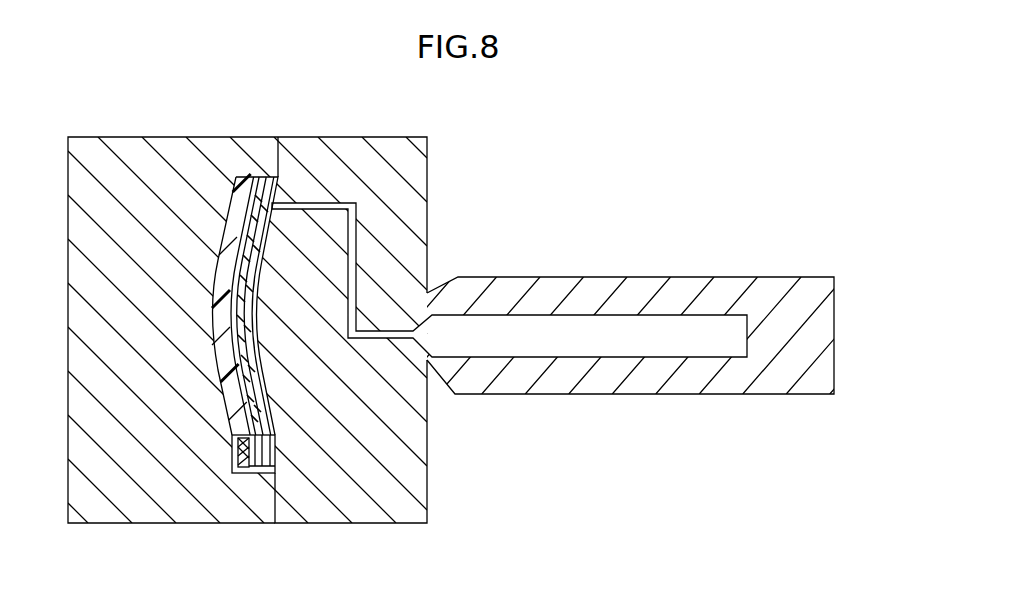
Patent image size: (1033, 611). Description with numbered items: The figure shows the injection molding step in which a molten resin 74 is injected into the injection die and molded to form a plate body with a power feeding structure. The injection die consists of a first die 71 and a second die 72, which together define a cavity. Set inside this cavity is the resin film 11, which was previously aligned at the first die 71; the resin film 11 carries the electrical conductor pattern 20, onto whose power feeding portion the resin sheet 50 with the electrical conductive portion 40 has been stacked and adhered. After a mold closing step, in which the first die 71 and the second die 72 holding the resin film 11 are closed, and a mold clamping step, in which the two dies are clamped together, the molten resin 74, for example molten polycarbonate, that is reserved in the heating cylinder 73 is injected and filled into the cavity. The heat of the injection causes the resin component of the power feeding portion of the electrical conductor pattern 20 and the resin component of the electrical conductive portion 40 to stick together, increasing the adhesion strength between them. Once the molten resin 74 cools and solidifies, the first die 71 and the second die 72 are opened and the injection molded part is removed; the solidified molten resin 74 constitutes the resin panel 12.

The second die 72 is at (86, 508).
The first die 71 is at (369, 507).
The heating cylinder 73 is at (573, 290).
The molten resin 74 is at (567, 337).
The resin panel 12 is at (230, 426).
The resin sheet 50 is at (246, 473).
The electrical conductive portion 40 is at (256, 473).
The electrical conductor pattern 20 is at (265, 473).
The resin film 11 is at (276, 470).